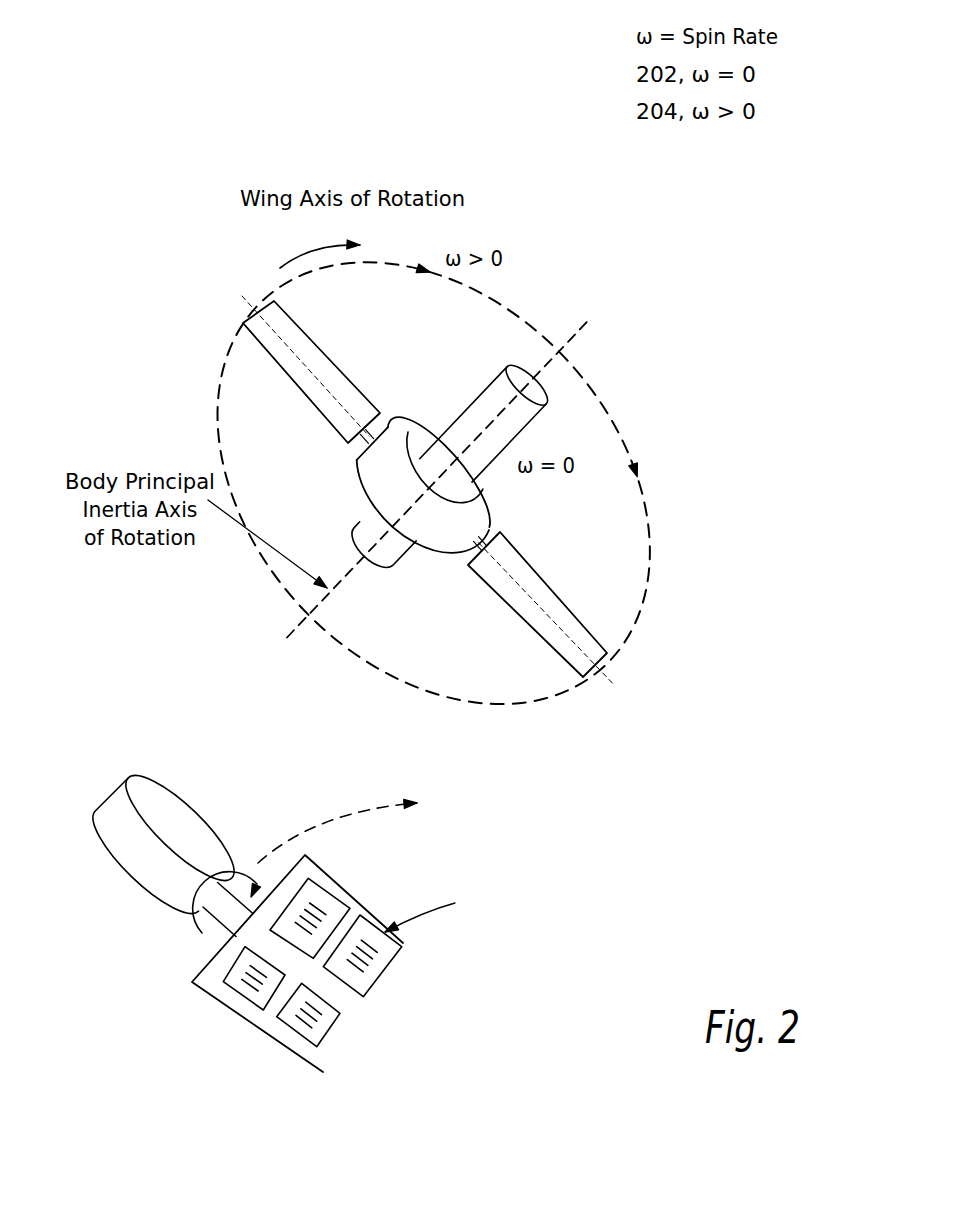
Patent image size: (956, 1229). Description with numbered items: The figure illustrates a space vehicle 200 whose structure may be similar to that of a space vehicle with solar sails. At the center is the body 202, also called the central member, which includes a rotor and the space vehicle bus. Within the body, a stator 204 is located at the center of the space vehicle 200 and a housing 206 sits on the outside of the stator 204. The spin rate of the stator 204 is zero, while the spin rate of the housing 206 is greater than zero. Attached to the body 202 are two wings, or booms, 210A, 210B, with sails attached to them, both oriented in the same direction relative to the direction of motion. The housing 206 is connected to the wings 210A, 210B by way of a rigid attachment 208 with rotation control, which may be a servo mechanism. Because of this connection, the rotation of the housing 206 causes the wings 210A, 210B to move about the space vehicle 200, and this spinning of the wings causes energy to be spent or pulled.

The space vehicle 200 is at (152, 268).
The body 202 is at (470, 407).
The stator 204 is at (477, 494).
The housing 206 is at (364, 495).
The rigid attachment 208 is at (474, 545).
The wing 210A is at (180, 1067).
The wing 210B is at (547, 648).